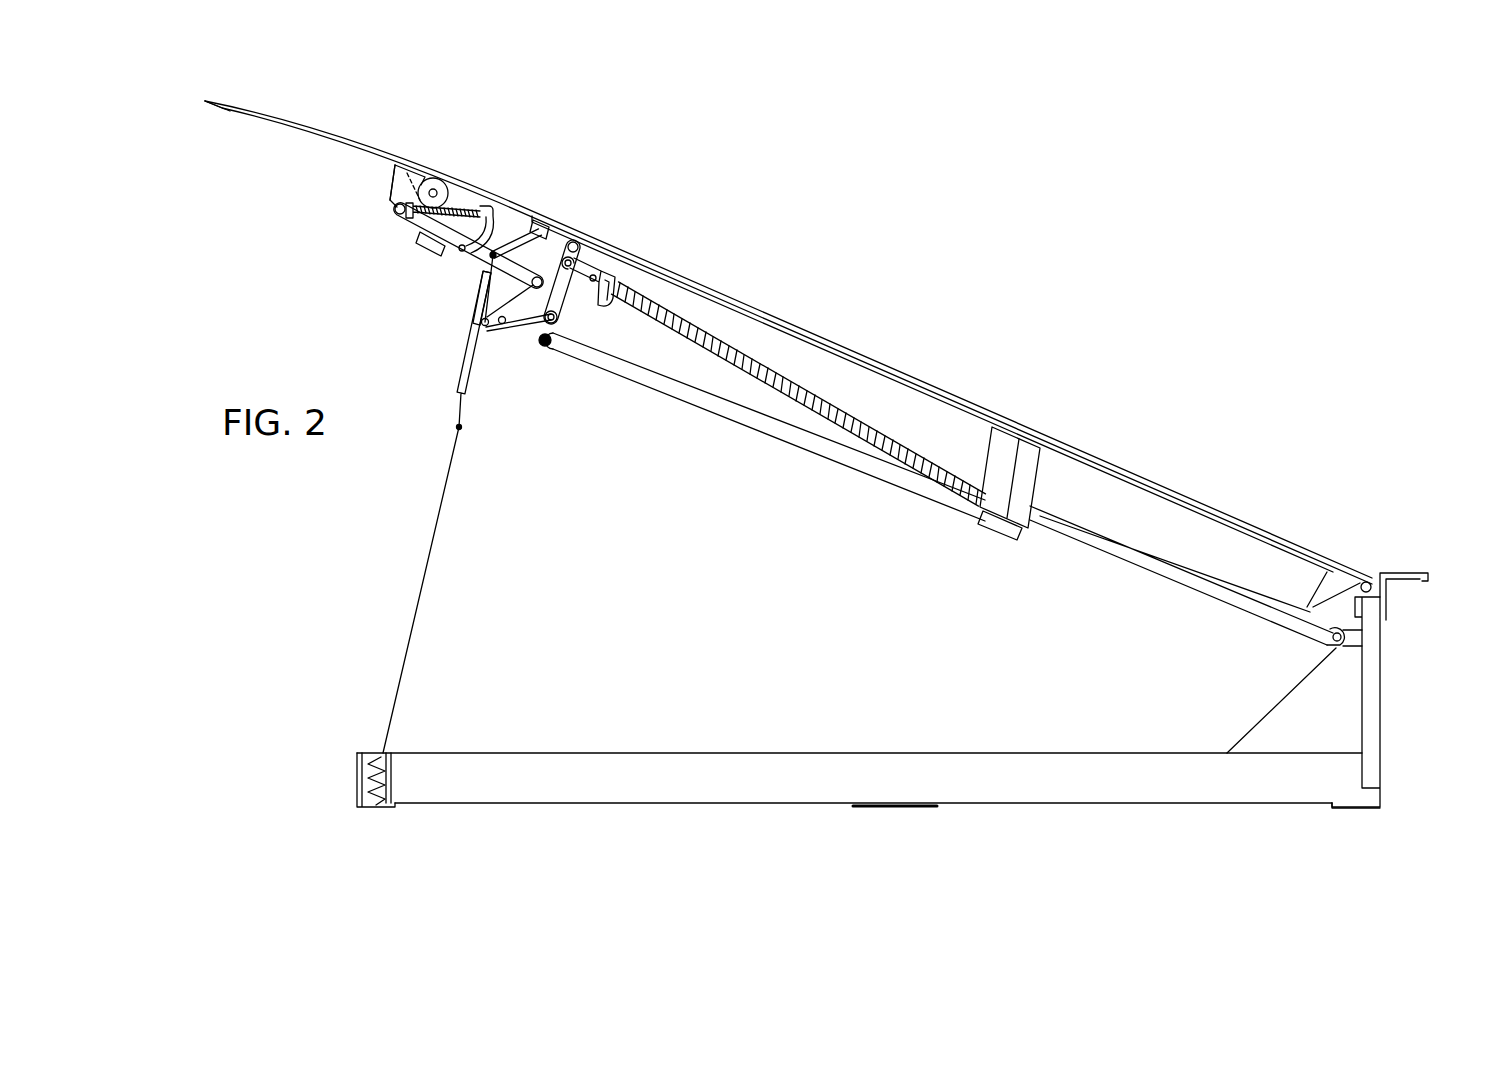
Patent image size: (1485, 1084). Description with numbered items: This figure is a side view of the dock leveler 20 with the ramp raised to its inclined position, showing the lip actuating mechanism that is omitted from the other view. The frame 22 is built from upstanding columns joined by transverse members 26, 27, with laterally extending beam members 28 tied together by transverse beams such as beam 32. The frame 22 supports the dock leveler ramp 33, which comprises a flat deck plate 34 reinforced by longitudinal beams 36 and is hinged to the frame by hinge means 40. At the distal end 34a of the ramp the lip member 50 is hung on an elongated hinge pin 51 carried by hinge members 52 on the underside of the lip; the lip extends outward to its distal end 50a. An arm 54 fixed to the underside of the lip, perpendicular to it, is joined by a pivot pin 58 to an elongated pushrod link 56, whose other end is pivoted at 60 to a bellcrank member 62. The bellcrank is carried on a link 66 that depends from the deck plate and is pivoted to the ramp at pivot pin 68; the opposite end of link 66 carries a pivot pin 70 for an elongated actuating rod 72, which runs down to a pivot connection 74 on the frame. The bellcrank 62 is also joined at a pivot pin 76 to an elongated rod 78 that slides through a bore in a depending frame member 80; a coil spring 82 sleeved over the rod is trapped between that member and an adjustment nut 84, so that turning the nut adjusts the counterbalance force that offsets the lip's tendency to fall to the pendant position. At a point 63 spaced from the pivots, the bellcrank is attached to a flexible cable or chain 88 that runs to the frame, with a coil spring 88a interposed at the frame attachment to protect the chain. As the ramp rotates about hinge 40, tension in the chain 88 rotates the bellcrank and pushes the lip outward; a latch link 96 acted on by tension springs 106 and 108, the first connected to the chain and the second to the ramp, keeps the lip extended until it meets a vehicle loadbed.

The dock leveler 20 is at (942, 305).
The frame 22 is at (1385, 708).
The transverse member 26 is at (1340, 808).
The transverse member 27 is at (1350, 606).
The beam member 28 is at (583, 753).
The transverse beam 32 is at (358, 784).
The dock leveler ramp 33 is at (1138, 470).
The deck plate 34 is at (870, 360).
The distal end of the ramp 34a is at (440, 182).
The longitudinal beam 36 is at (1186, 527).
The hinge means 40 is at (1372, 575).
The lip member 50 is at (340, 137).
The distal end of the lip member 50a is at (207, 101).
The hinge pin 51 is at (437, 194).
The hinge member 52 is at (392, 170).
The arm 54 is at (418, 176).
The pushrod link 56 is at (480, 292).
The pivot pin 58 is at (400, 215).
The pivot 60 is at (558, 322).
The bellcrank member 62 is at (513, 330).
The connection point 63 is at (486, 327).
The link 66 is at (545, 347).
The pivot pin 68 is at (578, 243).
The pivot pin 70 is at (553, 352).
The actuating rod 72 is at (775, 437).
The pivot connection 74 is at (1327, 640).
The pivot pin 76 is at (575, 262).
The rod 78 is at (718, 355).
The depending frame member 80 is at (992, 540).
The coil spring 82 is at (845, 442).
The adjustment nut 84 is at (620, 290).
The flexible cable or chain 88 is at (414, 625).
The coil spring 88a is at (381, 757).
The link 96 is at (440, 232).
The tension spring 106 is at (463, 385).
The tension spring 108 is at (555, 225).